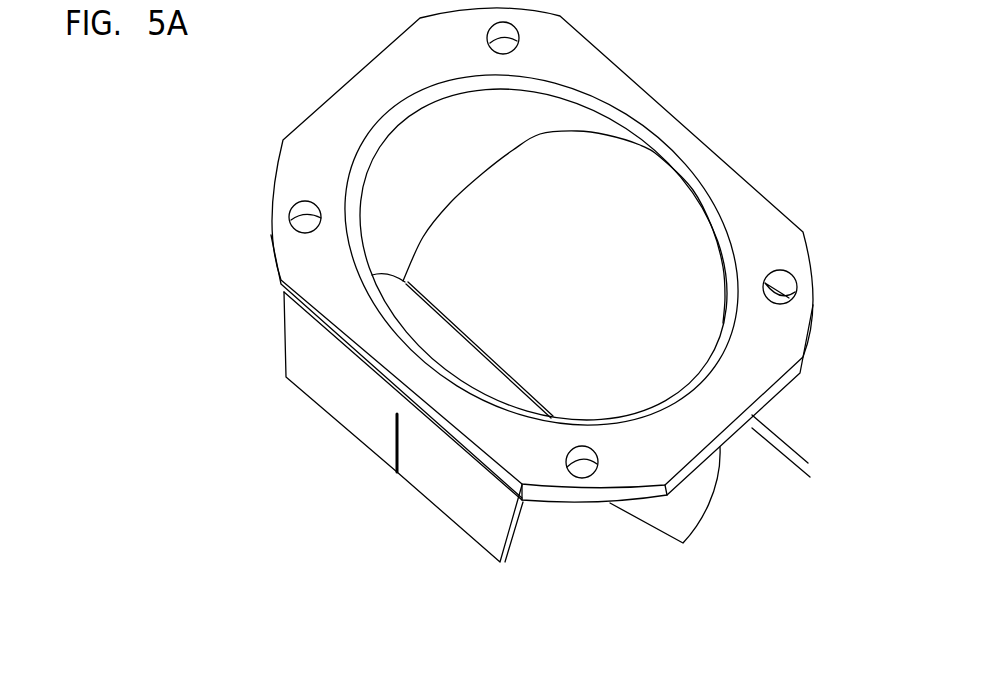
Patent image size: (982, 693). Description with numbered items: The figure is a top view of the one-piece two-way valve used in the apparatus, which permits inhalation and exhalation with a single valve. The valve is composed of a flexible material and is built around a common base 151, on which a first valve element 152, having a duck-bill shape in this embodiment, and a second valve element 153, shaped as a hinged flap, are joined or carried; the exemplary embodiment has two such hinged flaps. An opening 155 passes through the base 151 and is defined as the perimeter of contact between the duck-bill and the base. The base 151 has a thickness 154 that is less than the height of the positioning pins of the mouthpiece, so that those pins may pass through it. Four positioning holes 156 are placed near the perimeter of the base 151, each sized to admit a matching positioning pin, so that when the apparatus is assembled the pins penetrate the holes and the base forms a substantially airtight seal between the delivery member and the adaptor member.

The base 151 is at (750, 215).
The first valve element 152 is at (695, 510).
The second valve element 153 is at (513, 527).
The thickness 154 is at (793, 390).
The opening 155 is at (582, 275).
The positioning holes 156 is at (505, 43).